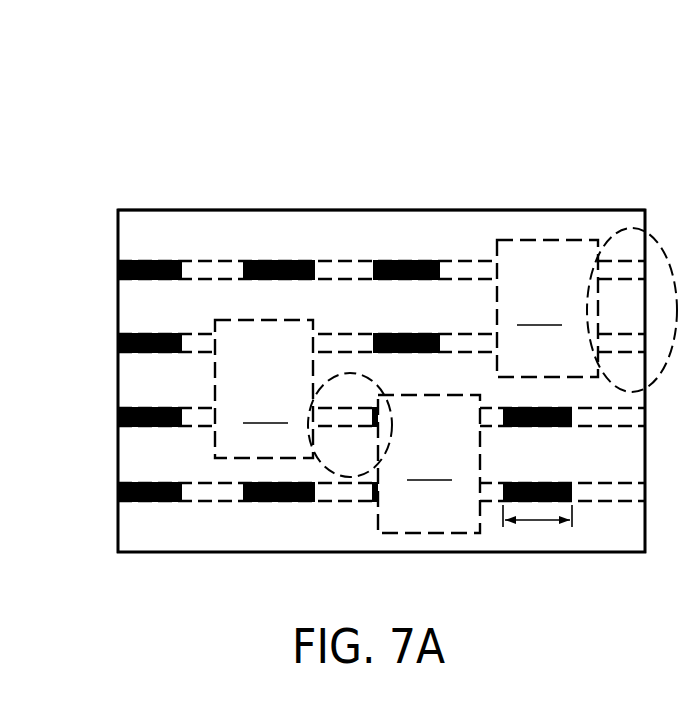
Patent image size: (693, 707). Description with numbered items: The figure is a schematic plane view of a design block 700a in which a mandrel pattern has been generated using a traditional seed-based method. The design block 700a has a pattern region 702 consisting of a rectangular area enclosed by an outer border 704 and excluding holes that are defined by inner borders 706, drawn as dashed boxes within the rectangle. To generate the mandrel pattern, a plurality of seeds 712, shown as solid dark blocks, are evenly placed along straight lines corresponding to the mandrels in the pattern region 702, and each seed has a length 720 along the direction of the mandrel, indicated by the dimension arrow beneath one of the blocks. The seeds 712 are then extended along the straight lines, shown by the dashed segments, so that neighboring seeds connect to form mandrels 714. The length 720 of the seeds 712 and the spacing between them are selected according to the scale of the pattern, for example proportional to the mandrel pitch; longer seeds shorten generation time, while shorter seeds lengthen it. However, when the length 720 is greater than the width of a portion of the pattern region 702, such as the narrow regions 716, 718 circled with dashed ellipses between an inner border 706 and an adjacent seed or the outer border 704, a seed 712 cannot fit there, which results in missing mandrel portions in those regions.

The design block 700a is at (217, 76).
The pattern region 702 is at (282, 233).
The outer border 704 is at (380, 210).
The inner borders 706 is at (406, 386).
The seeds 712 is at (263, 282).
The mandrels 714 is at (340, 275).
The region 716 is at (340, 470).
The region 718 is at (623, 227).
The length 720 is at (538, 520).